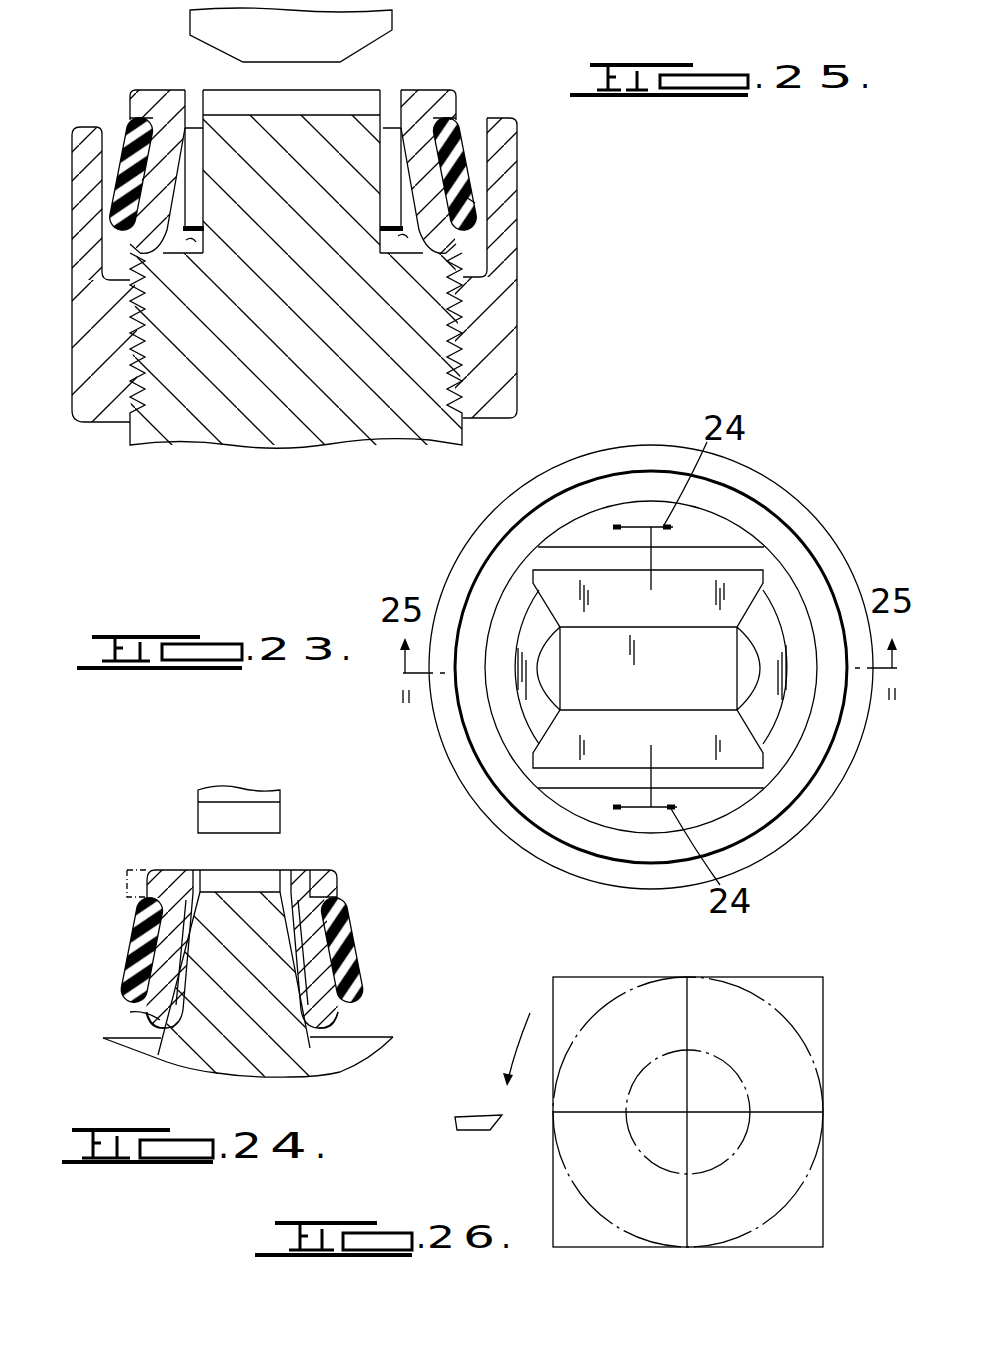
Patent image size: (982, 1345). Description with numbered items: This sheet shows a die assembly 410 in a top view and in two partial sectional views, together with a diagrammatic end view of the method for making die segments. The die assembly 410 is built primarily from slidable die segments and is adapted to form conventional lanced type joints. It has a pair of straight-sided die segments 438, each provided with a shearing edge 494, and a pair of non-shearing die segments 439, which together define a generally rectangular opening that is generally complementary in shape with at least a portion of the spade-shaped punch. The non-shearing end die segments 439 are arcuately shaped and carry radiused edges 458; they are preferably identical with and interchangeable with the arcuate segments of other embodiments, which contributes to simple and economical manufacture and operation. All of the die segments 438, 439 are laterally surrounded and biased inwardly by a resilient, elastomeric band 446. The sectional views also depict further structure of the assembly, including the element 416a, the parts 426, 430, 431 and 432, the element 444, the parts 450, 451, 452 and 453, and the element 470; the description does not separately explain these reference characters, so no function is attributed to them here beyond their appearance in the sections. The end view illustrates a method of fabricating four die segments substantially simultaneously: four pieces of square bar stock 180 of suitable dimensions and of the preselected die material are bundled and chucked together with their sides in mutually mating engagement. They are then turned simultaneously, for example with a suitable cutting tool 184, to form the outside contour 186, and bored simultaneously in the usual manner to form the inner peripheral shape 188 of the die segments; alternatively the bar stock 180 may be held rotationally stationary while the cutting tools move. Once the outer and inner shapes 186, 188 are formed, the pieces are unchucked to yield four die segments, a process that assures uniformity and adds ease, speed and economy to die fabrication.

In FIG. 25, the die assembly 410 is at (540, 380).
In FIG. 23, the die assembly 410 is at (478, 817).
In FIG. 24, the die assembly 410 is at (385, 1010).
In FIG. 25, the tube end 416a is at (216, 24).
In FIG. 24, the tube end 416a is at (200, 812).
In FIG. 25, the fitting body 426 is at (343, 415).
In FIG. 24, the fitting body 426 is at (337, 1057).
In FIG. 25, the sleeve 430 is at (284, 128).
In FIG. 24, the sleeve 430 is at (228, 1022).
In FIG. 24, the seal surface 431 is at (355, 923).
In FIG. 25, the retaining ring groove 432 is at (190, 258).
In FIG. 24, the retaining ring groove 432 is at (105, 1038).
In FIG. 23, the straight-sided die segment 438 is at (742, 580).
In FIG. 24, the straight-sided die segment 438 is at (152, 878).
In FIG. 25, the non-shearing die segment 439 is at (163, 117).
In FIG. 23, the non-shearing die segment 439 is at (517, 703).
In FIG. 24, the leg 444 is at (160, 1037).
In FIG. 25, the resilient elastomeric band 446 is at (463, 202).
In FIG. 23, the resilient elastomeric band 446 is at (550, 557).
In FIG. 24, the resilient elastomeric band 446 is at (359, 950).
In FIG. 25, the elastomeric seal 450 is at (115, 155).
In FIG. 24, the elastomeric seal 450 is at (140, 922).
In FIG. 25, the retaining ring 451 is at (147, 98).
In FIG. 24, the wedge segment 452 is at (175, 870).
In FIG. 24, the ring 453 is at (147, 883).
In FIG. 25, the radiused edge 458 is at (186, 88).
In FIG. 25, the nut 470 is at (507, 283).
In FIG. 23, the nut 470 is at (813, 800).
In FIG. 23, the shearing edge 494 is at (682, 630).
In FIG. 24, the shearing edge 494 is at (207, 877).
In FIG. 26, the square bar stock 180 is at (635, 1032).
In FIG. 26, the cutting tool 184 is at (473, 1130).
In FIG. 26, the outside contour 186 is at (600, 1210).
In FIG. 26, the inner peripheral shape 188 is at (642, 1150).